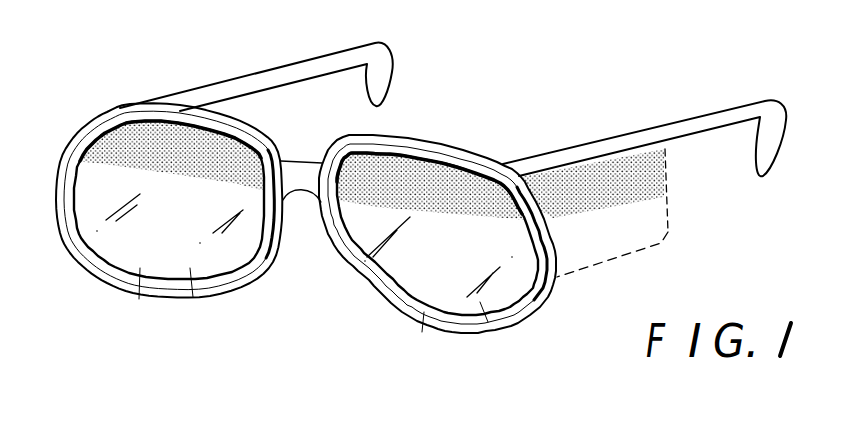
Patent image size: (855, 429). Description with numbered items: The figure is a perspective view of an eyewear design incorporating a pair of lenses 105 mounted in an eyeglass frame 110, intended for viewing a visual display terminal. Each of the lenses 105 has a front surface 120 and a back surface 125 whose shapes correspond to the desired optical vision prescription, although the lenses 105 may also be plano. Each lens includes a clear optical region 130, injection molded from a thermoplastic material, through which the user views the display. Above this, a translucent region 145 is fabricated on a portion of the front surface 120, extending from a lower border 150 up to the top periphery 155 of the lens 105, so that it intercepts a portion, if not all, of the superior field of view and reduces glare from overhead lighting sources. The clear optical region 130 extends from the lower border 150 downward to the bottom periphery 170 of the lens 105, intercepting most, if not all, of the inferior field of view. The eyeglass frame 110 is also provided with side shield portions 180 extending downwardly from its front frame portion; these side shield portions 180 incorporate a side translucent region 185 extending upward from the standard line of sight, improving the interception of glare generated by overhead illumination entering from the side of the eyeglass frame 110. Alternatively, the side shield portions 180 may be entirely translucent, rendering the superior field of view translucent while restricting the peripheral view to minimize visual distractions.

The lenses 105 is at (140, 267).
The eyeglass frame 110 is at (207, 88).
The front surface 120 is at (64, 275).
The back surface 125 is at (280, 105).
The clear optical region 130 is at (190, 228).
The translucent region 145 is at (113, 150).
The lower border 150 is at (331, 238).
The top periphery 155 is at (150, 128).
The bottom periphery 170 is at (190, 266).
The side shield portions 180 is at (670, 234).
The side translucent region 185 is at (622, 166).